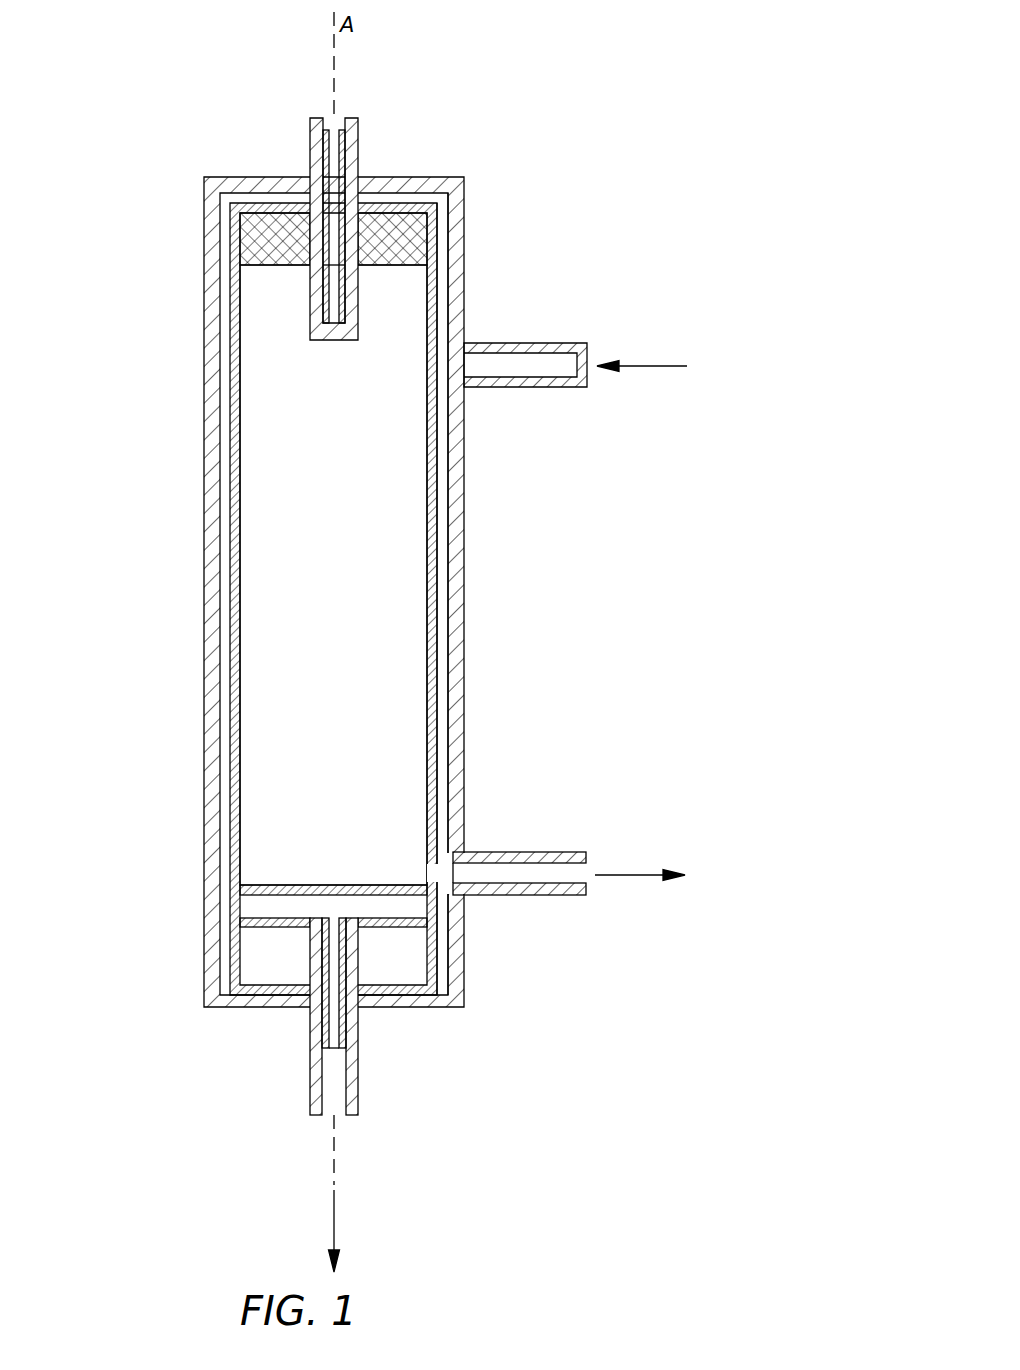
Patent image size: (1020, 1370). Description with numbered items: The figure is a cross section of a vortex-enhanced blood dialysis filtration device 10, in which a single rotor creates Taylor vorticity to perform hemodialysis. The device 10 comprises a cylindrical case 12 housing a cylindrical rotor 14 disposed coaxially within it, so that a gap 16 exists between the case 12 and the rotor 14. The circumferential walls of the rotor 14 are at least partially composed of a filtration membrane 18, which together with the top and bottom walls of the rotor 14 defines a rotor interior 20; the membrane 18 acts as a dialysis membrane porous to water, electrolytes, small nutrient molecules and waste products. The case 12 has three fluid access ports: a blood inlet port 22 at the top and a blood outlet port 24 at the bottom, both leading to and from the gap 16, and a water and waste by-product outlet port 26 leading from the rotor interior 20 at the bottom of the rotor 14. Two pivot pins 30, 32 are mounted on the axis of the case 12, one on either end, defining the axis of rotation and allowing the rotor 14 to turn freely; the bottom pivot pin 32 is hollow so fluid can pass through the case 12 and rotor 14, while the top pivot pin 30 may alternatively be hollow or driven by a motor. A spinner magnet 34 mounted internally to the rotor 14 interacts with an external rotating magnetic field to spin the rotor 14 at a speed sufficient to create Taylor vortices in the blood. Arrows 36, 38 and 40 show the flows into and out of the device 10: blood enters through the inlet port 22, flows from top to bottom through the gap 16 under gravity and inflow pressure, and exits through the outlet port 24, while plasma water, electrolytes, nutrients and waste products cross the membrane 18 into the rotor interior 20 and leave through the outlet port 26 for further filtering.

The filtration device 10 is at (562, 70).
The cylindrical case 12 is at (199, 405).
The cylindrical rotor 14 is at (226, 715).
The gap 16 is at (443, 652).
The filtration membrane 18 is at (444, 497).
The rotor interior 20 is at (292, 555).
The blood inlet port 22 is at (525, 343).
The blood outlet port 24 is at (515, 852).
The water and waste by-product outlet port 26 is at (311, 1075).
The top pivot pin 30 is at (352, 149).
The bottom pivot pin 32 is at (354, 1033).
The spinner magnet 34 is at (270, 243).
The arrow 36 is at (650, 366).
The arrow 38 is at (625, 875).
The arrow 40 is at (335, 1230).